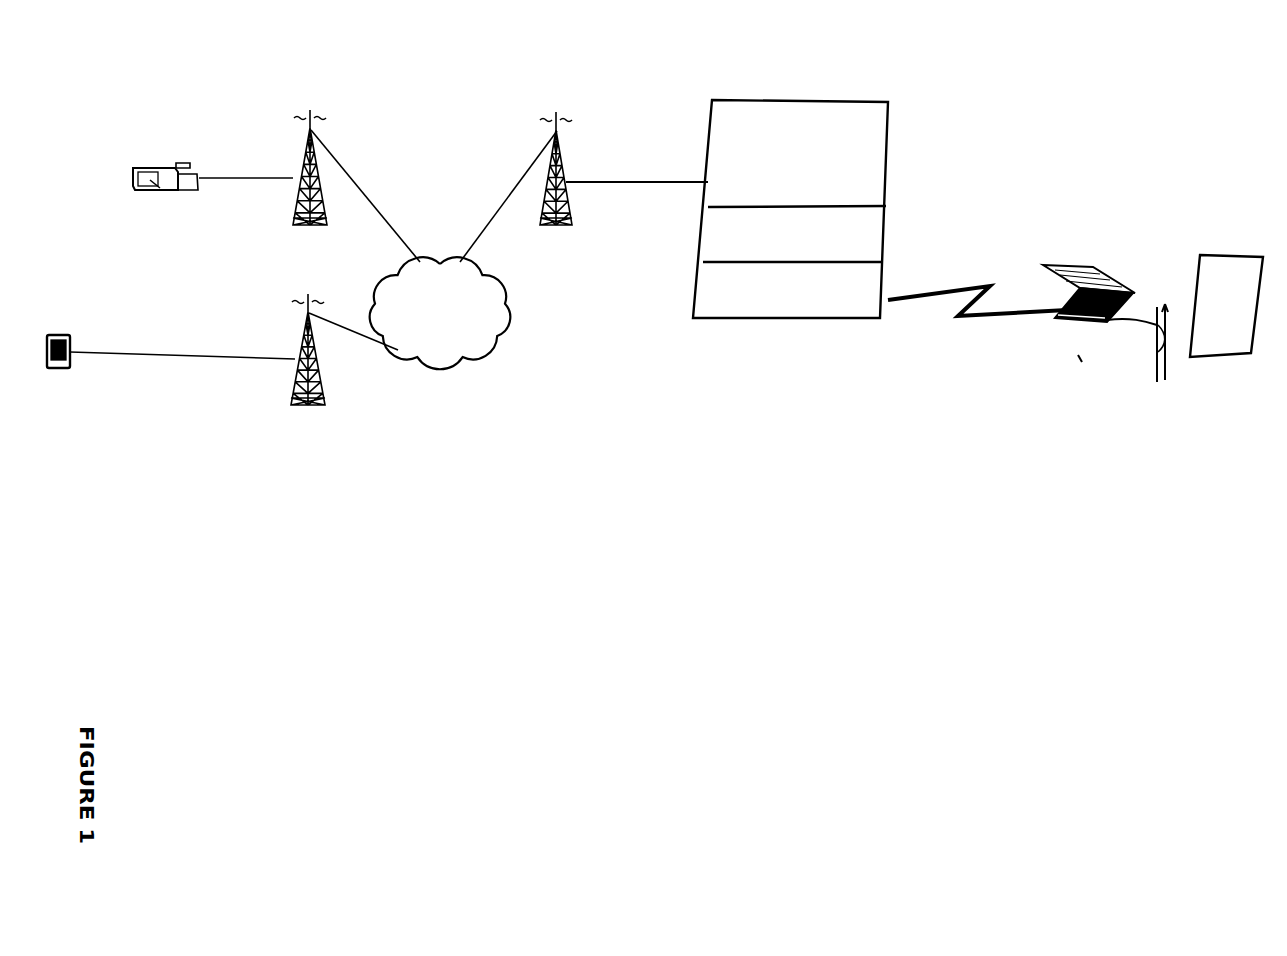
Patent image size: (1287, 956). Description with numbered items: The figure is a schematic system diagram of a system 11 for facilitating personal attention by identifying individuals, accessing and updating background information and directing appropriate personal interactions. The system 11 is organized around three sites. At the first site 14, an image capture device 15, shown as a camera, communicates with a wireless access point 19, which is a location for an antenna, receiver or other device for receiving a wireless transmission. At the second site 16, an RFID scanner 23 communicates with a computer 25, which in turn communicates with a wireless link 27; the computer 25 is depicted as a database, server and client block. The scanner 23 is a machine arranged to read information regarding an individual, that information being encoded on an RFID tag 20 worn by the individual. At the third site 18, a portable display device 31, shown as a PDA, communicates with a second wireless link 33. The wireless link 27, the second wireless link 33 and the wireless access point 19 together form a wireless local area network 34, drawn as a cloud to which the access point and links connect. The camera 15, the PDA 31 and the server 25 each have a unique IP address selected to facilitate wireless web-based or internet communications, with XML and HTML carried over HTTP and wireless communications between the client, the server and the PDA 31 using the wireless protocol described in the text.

The system 11 is at (580, 397).
The first site 14 is at (1048, 418).
The image capture device 15 is at (160, 236).
The second site 16 is at (637, 228).
The third site 18 is at (190, 416).
The wireless access point 19 is at (318, 155).
The RFID tag 20 is at (1237, 240).
The RFID scanner 23 is at (1157, 310).
The computer 25 is at (853, 80).
The wireless link 27 is at (577, 149).
The portable display device 31 is at (61, 323).
The second wireless link 33 is at (291, 346).
The wireless local area network 34 is at (447, 265).